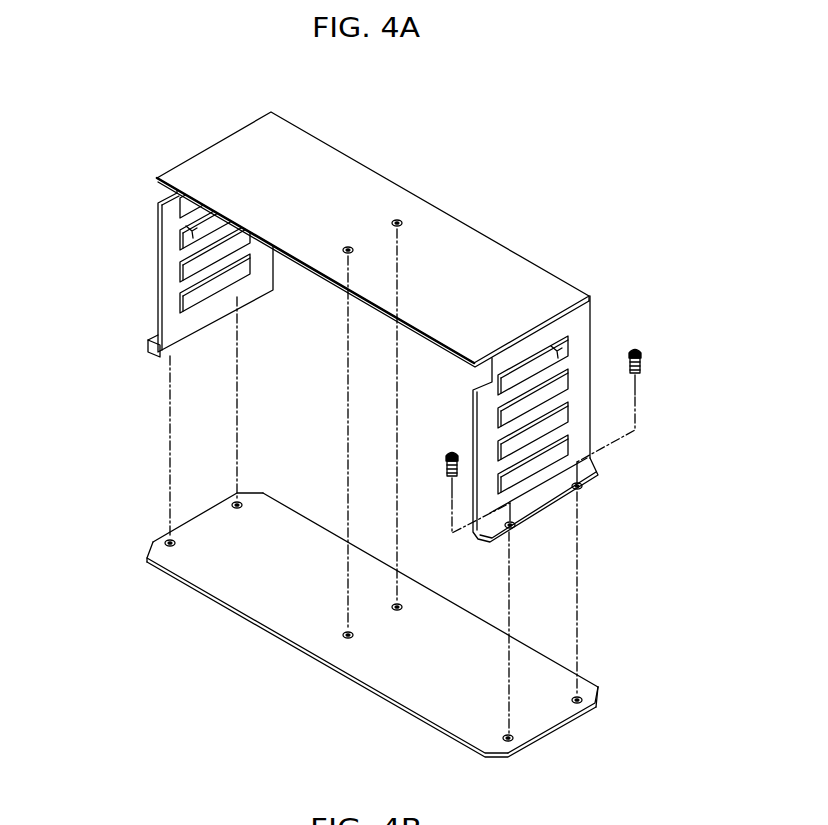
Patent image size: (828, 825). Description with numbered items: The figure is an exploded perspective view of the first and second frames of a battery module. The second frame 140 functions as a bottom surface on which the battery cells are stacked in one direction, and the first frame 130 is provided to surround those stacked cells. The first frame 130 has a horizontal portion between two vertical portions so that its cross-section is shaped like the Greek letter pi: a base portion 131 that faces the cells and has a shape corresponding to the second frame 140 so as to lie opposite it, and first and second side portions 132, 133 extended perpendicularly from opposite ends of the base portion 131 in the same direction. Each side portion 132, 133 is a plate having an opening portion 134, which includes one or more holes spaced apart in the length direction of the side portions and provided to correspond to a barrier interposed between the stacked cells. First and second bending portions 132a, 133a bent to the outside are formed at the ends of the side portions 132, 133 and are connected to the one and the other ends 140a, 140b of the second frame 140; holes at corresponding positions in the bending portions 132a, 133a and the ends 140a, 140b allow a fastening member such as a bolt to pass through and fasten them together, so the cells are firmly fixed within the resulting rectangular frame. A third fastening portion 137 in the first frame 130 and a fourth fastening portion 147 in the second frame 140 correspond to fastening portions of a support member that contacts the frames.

The first frame 130 is at (368, 309).
The base portion 131 is at (328, 175).
The first side portion 132 is at (556, 342).
The first bending portion 132a is at (550, 507).
The second side portion 133 is at (227, 212).
The second bending portion 133a is at (155, 340).
The opening portion 134 is at (182, 240).
The third fastening portion 137 is at (391, 223).
The second frame 140 is at (375, 624).
The one end of second frame 140a is at (560, 728).
The other end of second frame 140b is at (165, 541).
The fourth fastening portion 147 is at (391, 607).